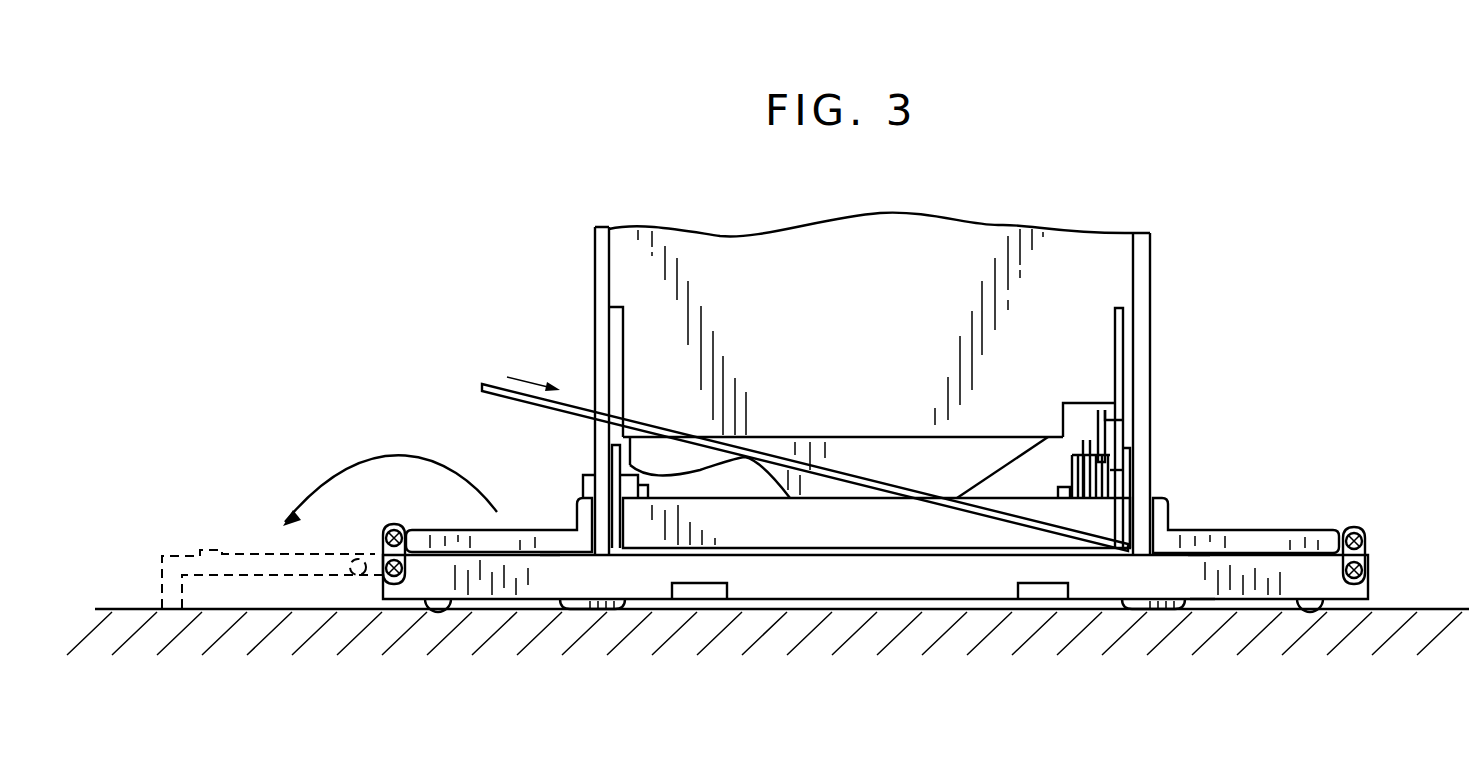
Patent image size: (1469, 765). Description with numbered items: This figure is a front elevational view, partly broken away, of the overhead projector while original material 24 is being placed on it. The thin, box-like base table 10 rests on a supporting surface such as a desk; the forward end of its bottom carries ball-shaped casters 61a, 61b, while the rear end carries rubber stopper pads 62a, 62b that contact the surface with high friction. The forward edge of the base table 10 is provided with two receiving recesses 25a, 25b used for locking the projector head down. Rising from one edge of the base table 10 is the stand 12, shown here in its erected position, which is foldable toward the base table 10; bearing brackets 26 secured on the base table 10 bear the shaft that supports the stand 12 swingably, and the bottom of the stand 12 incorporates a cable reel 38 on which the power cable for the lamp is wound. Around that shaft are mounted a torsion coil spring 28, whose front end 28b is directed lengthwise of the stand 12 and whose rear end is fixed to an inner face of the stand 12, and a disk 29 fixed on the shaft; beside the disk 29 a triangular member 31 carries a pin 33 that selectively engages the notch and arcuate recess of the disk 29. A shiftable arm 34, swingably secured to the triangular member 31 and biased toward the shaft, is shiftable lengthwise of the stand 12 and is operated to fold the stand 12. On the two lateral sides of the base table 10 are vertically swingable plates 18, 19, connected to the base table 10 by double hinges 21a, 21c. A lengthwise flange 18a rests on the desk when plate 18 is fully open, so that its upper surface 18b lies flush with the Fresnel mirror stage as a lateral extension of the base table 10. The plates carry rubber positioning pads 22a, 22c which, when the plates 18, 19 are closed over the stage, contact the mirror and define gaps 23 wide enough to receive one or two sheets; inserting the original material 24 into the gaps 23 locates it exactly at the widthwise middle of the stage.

The base table 10 is at (830, 622).
The stand 12 is at (1168, 269).
The swingable plate 18 is at (540, 508).
The lengthwise flange 18a is at (158, 600).
The upper surface 18b is at (253, 553).
The swingable plate 19 is at (1334, 511).
The double hinge 21a is at (386, 528).
The double hinge 21c is at (1371, 545).
The positioning pad 22a is at (548, 557).
The positioning pad 22c is at (1197, 575).
The gap 23 is at (1203, 600).
The original material 24 is at (486, 383).
The receiving recess 25a is at (705, 584).
The receiving recess 25b is at (1043, 584).
The bearing bracket 26 is at (1148, 500).
The torsion coil spring 28 is at (1062, 478).
The front end of torsion coil spring 28b is at (1070, 403).
The disk 29 is at (1117, 477).
The triangular member 31 is at (1118, 405).
The pin 33 is at (1110, 445).
The shiftable arm 34 is at (1127, 322).
The cable reel 38 is at (858, 450).
The ball-shaped caster 61a is at (440, 612).
The ball-shaped caster 61b is at (1308, 612).
The stopper pad 62a is at (605, 612).
The stopper pad 62b is at (1150, 612).